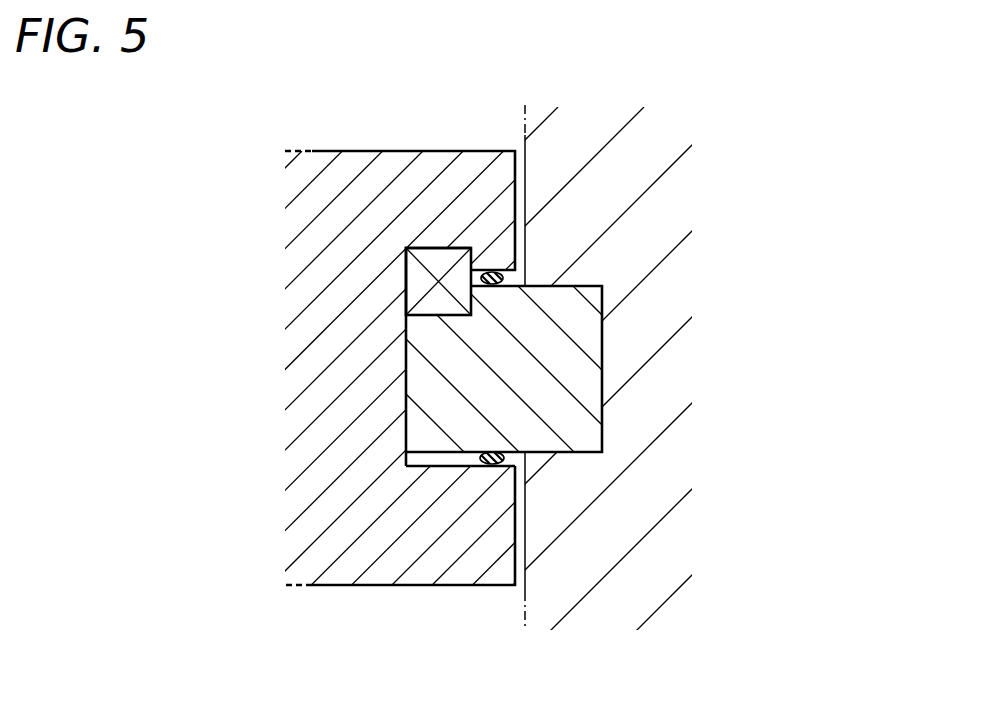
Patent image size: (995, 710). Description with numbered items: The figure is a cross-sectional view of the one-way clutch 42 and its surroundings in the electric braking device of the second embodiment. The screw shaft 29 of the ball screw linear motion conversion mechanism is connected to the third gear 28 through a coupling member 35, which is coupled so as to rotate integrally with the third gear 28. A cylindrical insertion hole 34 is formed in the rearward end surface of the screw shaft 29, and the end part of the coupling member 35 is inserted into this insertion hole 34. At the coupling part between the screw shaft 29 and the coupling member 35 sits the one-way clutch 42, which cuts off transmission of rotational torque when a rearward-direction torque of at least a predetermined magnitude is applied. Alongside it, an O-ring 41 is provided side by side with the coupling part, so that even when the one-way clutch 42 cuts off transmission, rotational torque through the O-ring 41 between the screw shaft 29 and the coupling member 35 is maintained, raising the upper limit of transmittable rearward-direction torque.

The third gear 28 is at (538, 153).
The screw shaft 29 is at (393, 167).
The insertion hole 34 is at (452, 464).
The coupling member 35 is at (588, 340).
The O-ring 41 is at (492, 265).
The one-way clutch 42 is at (435, 257).